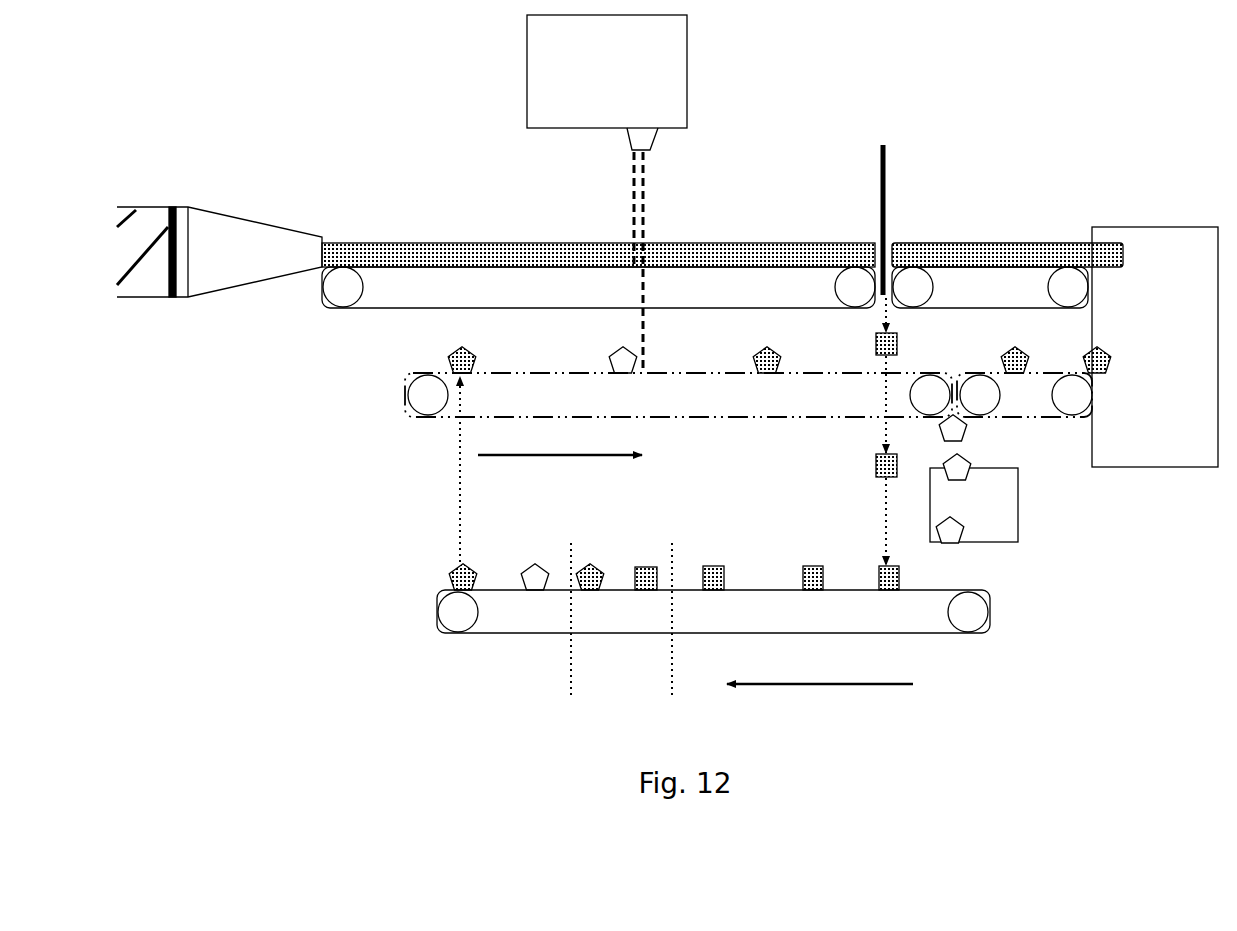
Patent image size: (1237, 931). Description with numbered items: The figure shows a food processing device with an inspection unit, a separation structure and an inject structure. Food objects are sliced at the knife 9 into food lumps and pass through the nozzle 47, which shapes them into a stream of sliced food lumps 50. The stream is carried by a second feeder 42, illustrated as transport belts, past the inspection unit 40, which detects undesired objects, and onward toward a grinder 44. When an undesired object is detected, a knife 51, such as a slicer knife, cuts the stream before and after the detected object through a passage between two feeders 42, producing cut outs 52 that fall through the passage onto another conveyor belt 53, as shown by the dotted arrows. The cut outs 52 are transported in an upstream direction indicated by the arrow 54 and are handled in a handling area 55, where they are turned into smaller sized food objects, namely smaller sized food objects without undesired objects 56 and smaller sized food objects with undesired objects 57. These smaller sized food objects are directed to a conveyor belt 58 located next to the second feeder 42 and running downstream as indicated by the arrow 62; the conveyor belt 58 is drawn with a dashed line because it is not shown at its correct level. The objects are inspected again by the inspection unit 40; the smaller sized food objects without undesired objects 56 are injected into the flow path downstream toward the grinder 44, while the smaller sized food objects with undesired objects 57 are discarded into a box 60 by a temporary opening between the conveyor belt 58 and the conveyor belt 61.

The knife 9 is at (172, 203).
The nozzle 47 is at (225, 255).
The inspection unit 40 is at (588, 87).
The stream of sliced food lumps 50 is at (495, 242).
The second feeder 42 is at (733, 283).
The knife 51 is at (892, 165).
The grinder 44 is at (1151, 355).
The conveyor belt 58 is at (692, 422).
The conveyor belt 61 is at (1017, 419).
The arrow 62 is at (560, 438).
The cut outs 52 is at (908, 345).
The smaller sized food objects without undesired objects 56 is at (596, 562).
The smaller sized food objects with undesired objects 57 is at (968, 441).
The box 60 is at (970, 518).
The conveyor belt 53 is at (932, 635).
The handling area 55 is at (621, 619).
The arrow 54 is at (820, 664).